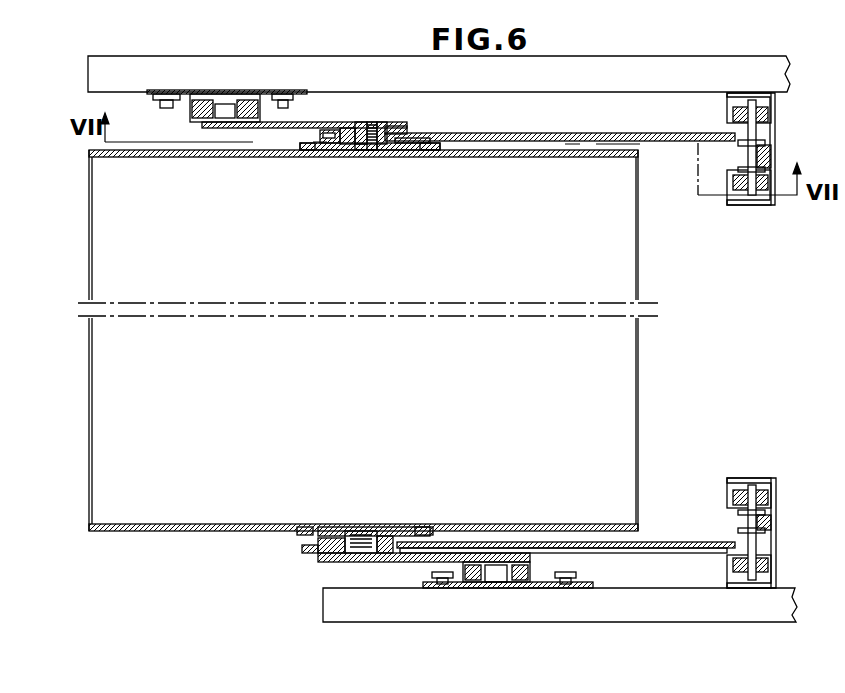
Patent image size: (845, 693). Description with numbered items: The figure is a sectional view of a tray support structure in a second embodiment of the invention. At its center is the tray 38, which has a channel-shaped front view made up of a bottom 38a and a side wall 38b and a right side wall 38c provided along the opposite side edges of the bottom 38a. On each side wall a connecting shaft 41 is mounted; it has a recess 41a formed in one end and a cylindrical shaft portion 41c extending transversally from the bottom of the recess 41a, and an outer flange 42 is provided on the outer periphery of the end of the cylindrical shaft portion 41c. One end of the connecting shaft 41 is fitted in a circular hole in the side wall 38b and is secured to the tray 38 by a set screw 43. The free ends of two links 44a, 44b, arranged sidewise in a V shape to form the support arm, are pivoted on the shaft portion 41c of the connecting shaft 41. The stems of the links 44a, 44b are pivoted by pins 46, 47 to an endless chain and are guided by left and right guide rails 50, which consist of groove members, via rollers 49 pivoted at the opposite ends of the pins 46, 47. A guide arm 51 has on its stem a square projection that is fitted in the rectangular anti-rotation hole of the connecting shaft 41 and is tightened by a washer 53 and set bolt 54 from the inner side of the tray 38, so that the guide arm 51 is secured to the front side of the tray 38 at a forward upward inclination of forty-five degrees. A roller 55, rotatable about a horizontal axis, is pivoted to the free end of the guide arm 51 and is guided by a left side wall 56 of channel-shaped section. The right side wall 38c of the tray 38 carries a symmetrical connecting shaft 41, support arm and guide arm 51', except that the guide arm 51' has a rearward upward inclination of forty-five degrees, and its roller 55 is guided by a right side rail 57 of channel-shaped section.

The tray 38 is at (640, 293).
The bottom 38a is at (642, 335).
The side wall 38b is at (531, 157).
The right side wall 38c is at (523, 524).
The connecting shaft 41 is at (352, 565).
The recess 41a is at (383, 151).
The cylindrical shaft portion 41c is at (374, 128).
The outer flange 42 is at (418, 138).
The set screw 43 is at (305, 151).
The link 44a is at (683, 141).
The link 44b is at (656, 133).
The pin 46 is at (751, 100).
The pin 47 is at (750, 205).
The roller 49 is at (775, 118).
The guide rail 50 is at (776, 147).
The guide arm 51 is at (304, 76).
The guide arm 51' is at (424, 602).
The washer 53 is at (338, 151).
The set bolt 54 is at (362, 151).
The roller 55 is at (192, 116).
The left side wall 56 is at (258, 90).
The right side rail 57 is at (505, 582).